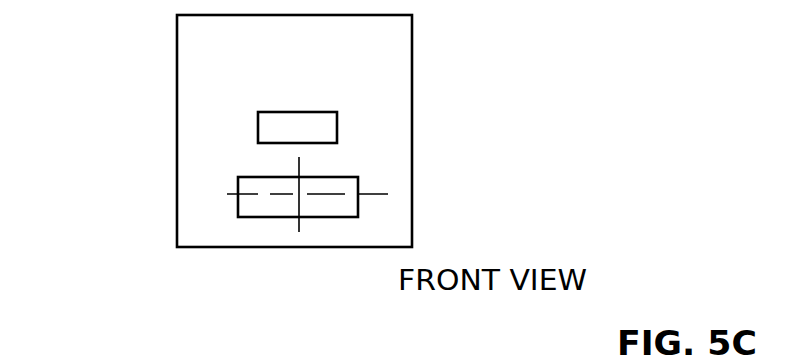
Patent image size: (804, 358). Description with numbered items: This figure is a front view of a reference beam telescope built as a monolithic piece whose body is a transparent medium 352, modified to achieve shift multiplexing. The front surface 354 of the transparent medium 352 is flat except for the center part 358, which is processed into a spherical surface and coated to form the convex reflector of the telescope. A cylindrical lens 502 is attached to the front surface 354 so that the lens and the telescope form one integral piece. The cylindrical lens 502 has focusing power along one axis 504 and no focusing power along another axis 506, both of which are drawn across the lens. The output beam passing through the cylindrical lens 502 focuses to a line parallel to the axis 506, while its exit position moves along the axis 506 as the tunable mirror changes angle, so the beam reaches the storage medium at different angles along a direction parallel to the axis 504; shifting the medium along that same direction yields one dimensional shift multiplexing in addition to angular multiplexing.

The transparent medium 352 is at (177, 112).
The front surface 354 is at (380, 152).
The center part 358 is at (282, 111).
The cylindrical lens 502 is at (333, 217).
The axis 504 is at (299, 231).
The axis 506 is at (213, 195).